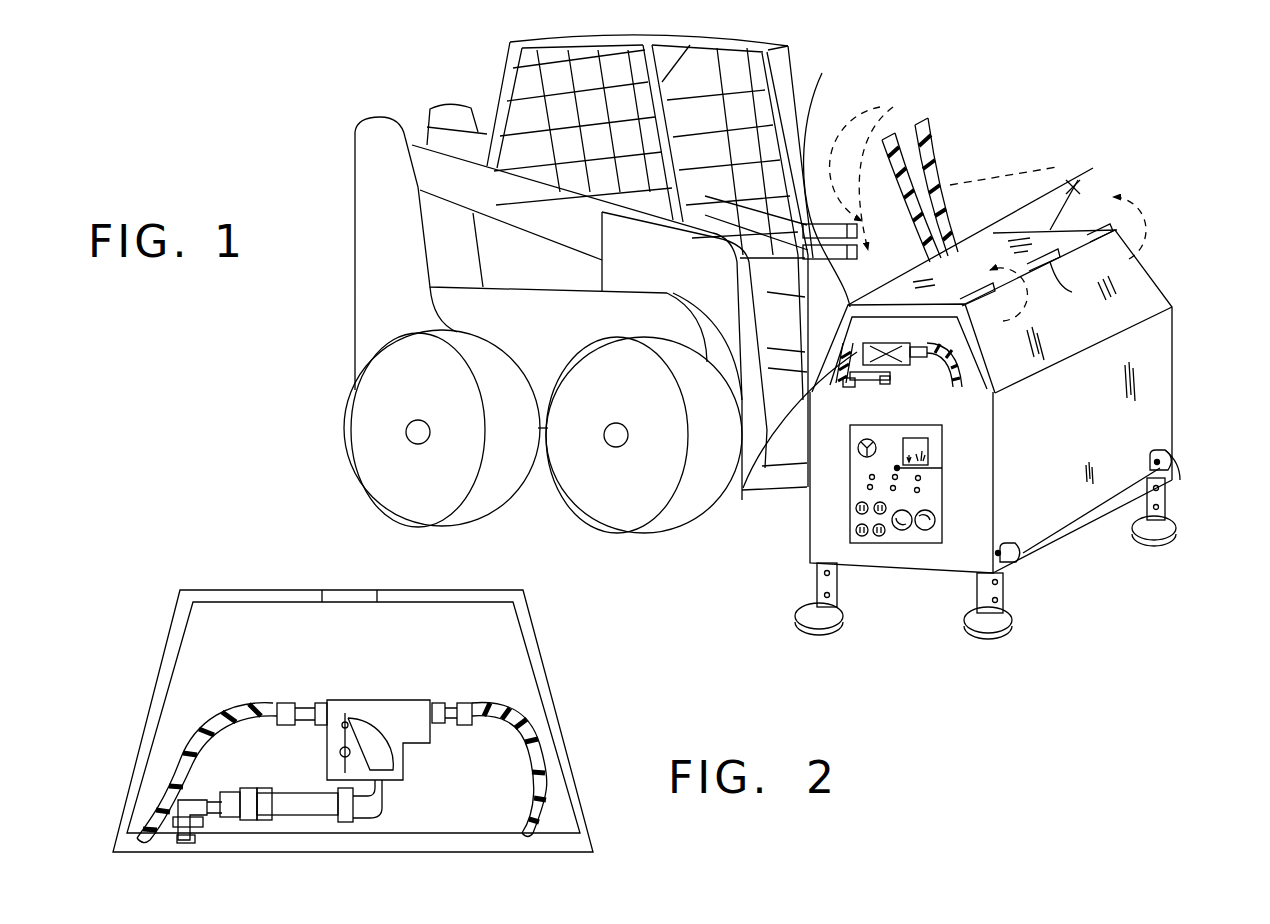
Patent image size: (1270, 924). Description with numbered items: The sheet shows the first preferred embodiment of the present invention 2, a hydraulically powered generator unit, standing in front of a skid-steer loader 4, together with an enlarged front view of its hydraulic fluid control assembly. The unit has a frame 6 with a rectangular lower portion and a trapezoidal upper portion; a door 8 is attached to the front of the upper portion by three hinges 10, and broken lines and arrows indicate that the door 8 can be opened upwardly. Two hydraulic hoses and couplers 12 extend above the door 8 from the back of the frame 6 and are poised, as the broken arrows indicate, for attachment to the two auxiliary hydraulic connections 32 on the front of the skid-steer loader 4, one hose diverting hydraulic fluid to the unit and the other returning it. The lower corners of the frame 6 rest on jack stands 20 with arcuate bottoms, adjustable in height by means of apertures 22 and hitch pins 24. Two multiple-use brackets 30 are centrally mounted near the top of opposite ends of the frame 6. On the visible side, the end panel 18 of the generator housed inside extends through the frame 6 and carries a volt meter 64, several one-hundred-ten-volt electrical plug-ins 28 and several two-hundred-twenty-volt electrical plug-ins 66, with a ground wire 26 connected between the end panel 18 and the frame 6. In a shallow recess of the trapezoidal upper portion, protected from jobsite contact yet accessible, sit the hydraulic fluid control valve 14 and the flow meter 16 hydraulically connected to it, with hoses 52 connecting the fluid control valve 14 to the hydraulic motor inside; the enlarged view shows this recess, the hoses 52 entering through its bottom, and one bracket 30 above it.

In FIG. 1, the present invention 2 is at (1133, 92).
In FIG. 1, the skid-steer loader 4 is at (358, 333).
In FIG. 1, the frame 6 is at (1152, 410).
In FIG. 2, the frame 6 is at (167, 658).
In FIG. 1, the door 8 is at (1012, 196).
In FIG. 1, the hinges 10 is at (1110, 232).
In FIG. 1, the hydraulic hoses and couplers 12 is at (940, 185).
In FIG. 1, the hydraulic fluid control valve 14 is at (915, 336).
In FIG. 2, the hydraulic fluid control valve 14 is at (380, 710).
In FIG. 1, the flow meter 16 is at (867, 390).
In FIG. 2, the flow meter 16 is at (313, 800).
In FIG. 1, the end panel 18 is at (857, 468).
In FIG. 1, the jack stand 20 is at (967, 615).
In FIG. 1, the apertures 22 is at (1005, 588).
In FIG. 1, the hitch pins 24 is at (1025, 553).
In FIG. 1, the ground wire 26 is at (960, 466).
In FIG. 1, the 110-volt electrical plug-ins 28 is at (853, 506).
In FIG. 1, the multiple-use brackets 30 is at (997, 234).
In FIG. 2, the multiple-use brackets 30 is at (352, 595).
In FIG. 1, the auxiliary hydraulic connections 32 is at (830, 178).
In FIG. 1, the hydraulic hoses 52 is at (962, 372).
In FIG. 2, the hydraulic hoses 52 is at (178, 745).
In FIG. 1, the volt meter 64 is at (920, 437).
In FIG. 1, the 220-volt electrical plug-ins 66 is at (856, 450).